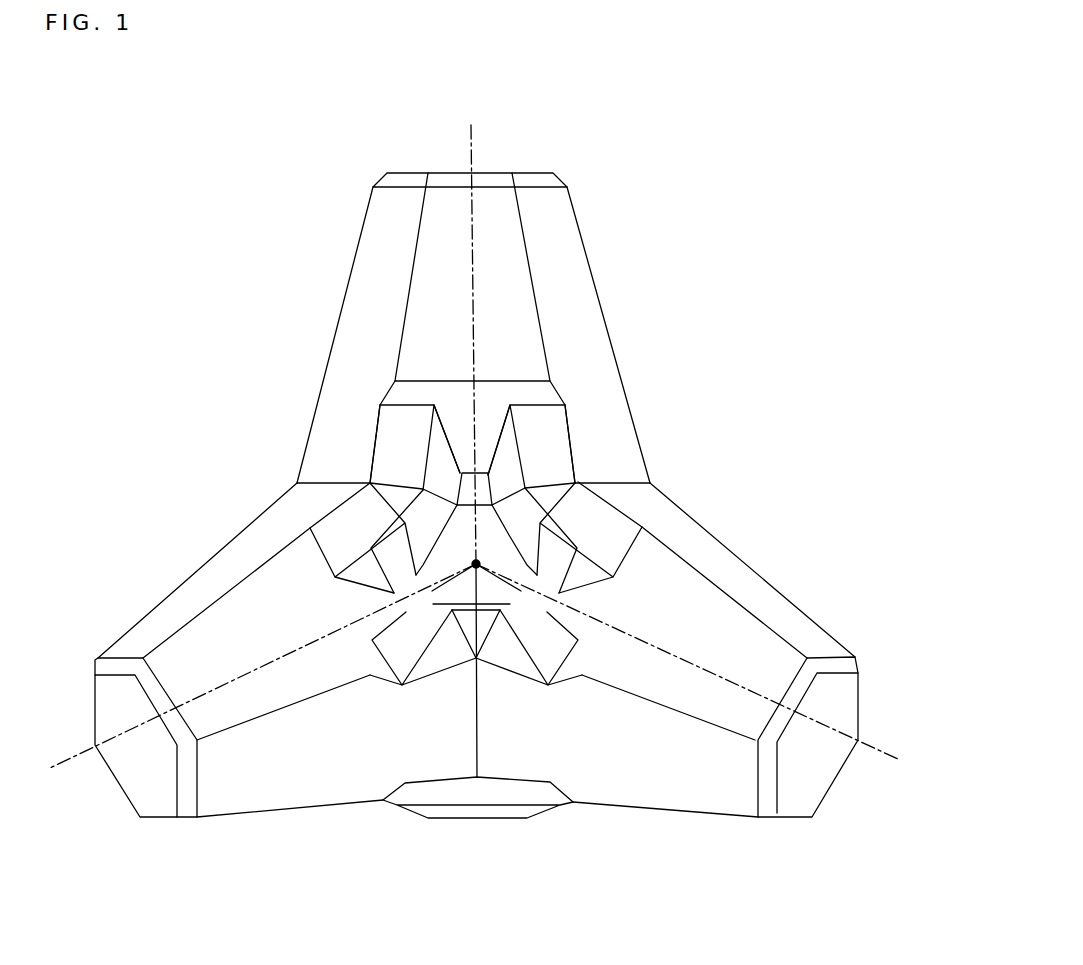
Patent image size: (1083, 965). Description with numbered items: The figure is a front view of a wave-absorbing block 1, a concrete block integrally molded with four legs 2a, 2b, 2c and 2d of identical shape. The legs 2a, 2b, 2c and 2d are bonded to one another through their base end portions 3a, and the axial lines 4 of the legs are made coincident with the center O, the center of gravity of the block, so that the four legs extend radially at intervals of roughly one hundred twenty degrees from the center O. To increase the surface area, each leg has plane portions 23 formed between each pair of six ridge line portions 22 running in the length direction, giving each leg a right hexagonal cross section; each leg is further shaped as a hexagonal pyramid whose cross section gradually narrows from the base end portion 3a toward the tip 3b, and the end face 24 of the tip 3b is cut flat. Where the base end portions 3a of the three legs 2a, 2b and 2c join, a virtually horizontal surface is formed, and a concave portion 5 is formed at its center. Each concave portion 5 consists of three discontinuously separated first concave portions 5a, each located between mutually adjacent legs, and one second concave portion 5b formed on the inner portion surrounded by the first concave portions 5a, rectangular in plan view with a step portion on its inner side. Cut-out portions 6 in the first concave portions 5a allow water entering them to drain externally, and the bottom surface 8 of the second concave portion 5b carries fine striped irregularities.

The wave-absorbing block 1 is at (433, 132).
The leg 2a is at (582, 290).
The leg 2b is at (133, 622).
The leg 2c is at (817, 617).
The leg 2d is at (540, 793).
The base end portion 3a is at (327, 440).
The tip 3b is at (560, 201).
The axial line 4 is at (471, 130).
The concave portion 5 is at (690, 345).
The first concave portion 5a is at (403, 418).
The second concave portion 5b is at (540, 437).
The cut-out portion 6 is at (370, 427).
The bottom surface 8 is at (452, 557).
The center O is at (383, 683).
The ridge line portion 22 is at (365, 208).
The plane portion 23 is at (362, 195).
The end face 24 is at (540, 175).